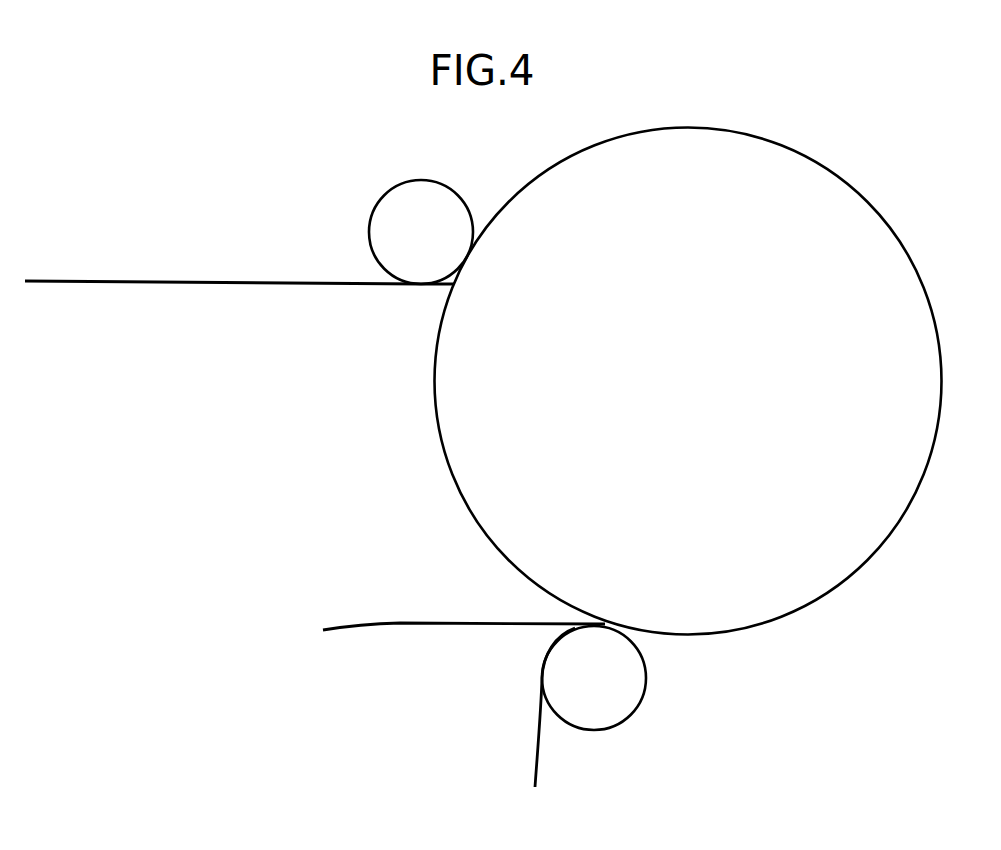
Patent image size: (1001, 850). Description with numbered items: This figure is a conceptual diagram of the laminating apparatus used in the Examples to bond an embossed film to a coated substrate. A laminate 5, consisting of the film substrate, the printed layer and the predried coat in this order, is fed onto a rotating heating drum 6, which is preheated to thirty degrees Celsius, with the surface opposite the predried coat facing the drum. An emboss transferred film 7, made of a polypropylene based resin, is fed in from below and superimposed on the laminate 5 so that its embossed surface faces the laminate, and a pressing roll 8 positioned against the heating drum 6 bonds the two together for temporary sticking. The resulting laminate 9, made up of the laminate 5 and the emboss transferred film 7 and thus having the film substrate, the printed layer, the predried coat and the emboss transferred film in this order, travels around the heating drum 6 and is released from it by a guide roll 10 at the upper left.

The laminate 5 is at (464, 650).
The heating drum 6 is at (688, 381).
The emboss transferred film 7 is at (555, 722).
The pressing roll 8 is at (594, 678).
The laminate of the laminate and the emboss transferred film 9 is at (239, 318).
The guide roll 10 is at (421, 232).